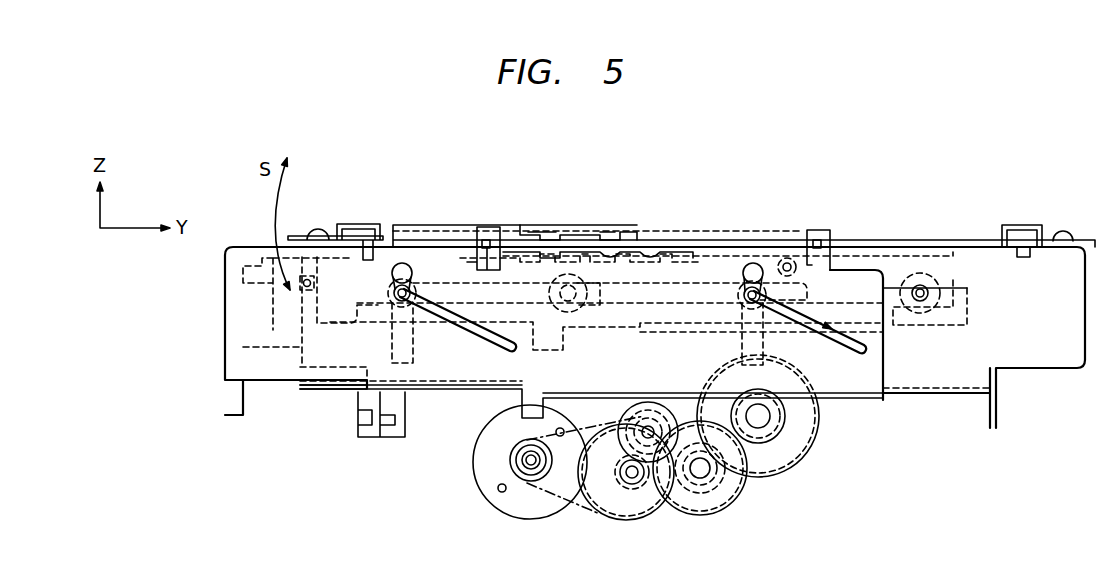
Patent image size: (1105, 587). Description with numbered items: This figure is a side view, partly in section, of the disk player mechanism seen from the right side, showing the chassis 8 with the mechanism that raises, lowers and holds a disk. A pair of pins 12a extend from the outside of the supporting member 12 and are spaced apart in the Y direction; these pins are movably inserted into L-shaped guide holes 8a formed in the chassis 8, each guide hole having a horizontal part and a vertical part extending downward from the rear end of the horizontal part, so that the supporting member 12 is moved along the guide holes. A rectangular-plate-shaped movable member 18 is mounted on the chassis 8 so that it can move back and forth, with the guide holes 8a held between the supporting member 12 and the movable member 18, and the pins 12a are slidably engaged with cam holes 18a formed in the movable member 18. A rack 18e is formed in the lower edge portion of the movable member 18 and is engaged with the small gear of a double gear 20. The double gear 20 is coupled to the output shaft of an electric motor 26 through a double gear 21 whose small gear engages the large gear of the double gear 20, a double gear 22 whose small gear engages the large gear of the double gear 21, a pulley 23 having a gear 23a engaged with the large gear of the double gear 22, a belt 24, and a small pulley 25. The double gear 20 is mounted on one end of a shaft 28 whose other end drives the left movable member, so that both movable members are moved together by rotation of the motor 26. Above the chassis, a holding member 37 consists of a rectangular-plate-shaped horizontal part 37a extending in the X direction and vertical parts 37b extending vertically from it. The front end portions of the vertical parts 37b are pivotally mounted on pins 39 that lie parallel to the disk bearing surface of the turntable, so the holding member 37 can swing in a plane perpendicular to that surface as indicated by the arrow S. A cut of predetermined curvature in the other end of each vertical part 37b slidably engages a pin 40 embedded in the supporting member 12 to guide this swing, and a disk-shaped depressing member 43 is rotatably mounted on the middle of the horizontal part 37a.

The chassis 8 is at (933, 375).
The L-shaped guide hole 8a is at (440, 292).
The supporting member 12 is at (883, 255).
The pin 12a is at (404, 285).
The movable member 18 is at (278, 372).
The cam hole 18a is at (460, 340).
The rack 18e is at (837, 400).
The double gear 20 is at (792, 473).
The double gear 21 is at (715, 522).
The double gear 22 is at (617, 450).
The pulley 23 is at (657, 508).
The gear 23a is at (632, 482).
The belt 24 is at (565, 503).
The small pulley 25 is at (528, 473).
The electric motor 26 is at (493, 495).
The shaft 28 is at (758, 418).
The holding member 37 is at (727, 227).
The horizontal part 37a is at (675, 232).
The vertical part 37b is at (363, 280).
The pin 39 is at (790, 265).
The pin 40 is at (309, 280).
The depressing member 43 is at (650, 230).